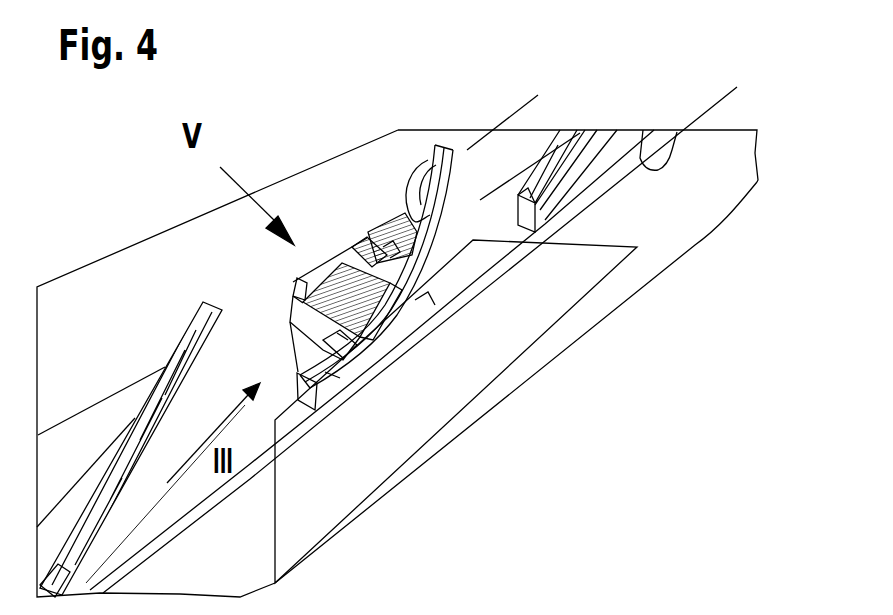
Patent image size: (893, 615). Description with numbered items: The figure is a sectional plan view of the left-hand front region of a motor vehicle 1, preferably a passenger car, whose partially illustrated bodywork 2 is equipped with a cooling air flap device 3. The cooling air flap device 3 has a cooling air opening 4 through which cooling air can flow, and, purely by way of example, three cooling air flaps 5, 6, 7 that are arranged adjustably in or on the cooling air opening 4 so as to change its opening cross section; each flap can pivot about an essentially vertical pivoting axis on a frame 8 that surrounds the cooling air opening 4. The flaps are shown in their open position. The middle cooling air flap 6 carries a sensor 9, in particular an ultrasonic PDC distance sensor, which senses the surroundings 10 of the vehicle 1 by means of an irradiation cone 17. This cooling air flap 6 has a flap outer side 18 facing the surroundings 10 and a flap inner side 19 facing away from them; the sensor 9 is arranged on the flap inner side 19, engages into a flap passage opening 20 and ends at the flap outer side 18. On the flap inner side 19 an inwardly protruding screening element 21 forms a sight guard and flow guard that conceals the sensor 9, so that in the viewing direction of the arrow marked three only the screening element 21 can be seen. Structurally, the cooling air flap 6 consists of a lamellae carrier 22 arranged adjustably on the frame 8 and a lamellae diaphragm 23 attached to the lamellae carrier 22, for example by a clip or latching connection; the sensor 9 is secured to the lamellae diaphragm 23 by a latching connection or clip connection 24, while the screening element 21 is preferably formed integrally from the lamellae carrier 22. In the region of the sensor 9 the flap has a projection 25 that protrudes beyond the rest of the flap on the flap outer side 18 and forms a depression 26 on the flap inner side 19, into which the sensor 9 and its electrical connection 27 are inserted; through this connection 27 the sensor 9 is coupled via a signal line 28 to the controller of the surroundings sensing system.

The motor vehicle 1 is at (690, 309).
The bodywork 2 is at (699, 251).
The cooling air flap device 3 is at (640, 108).
The cooling air opening 4 is at (650, 131).
The cooling air flap 5 is at (150, 420).
The cooling air flap 6 is at (480, 288).
The cooling air flap 7 is at (572, 130).
The frame 8 is at (426, 330).
The sensor 9 is at (332, 270).
The surroundings 10 is at (376, 314).
The irradiation cone 17 is at (305, 558).
The flap outer side 18 is at (415, 300).
The flap inner side 19 is at (345, 275).
The flap passage opening 20 is at (337, 333).
The screening element 21 is at (290, 322).
The lamellae carrier 22 is at (414, 172).
The lamellae diaphragm 23 is at (560, 192).
The latching connection or clip connection 24 is at (333, 370).
The projection 25 is at (512, 107).
The depression 26 is at (378, 212).
The electrical connection 27 is at (372, 215).
The signal line 28 is at (418, 212).